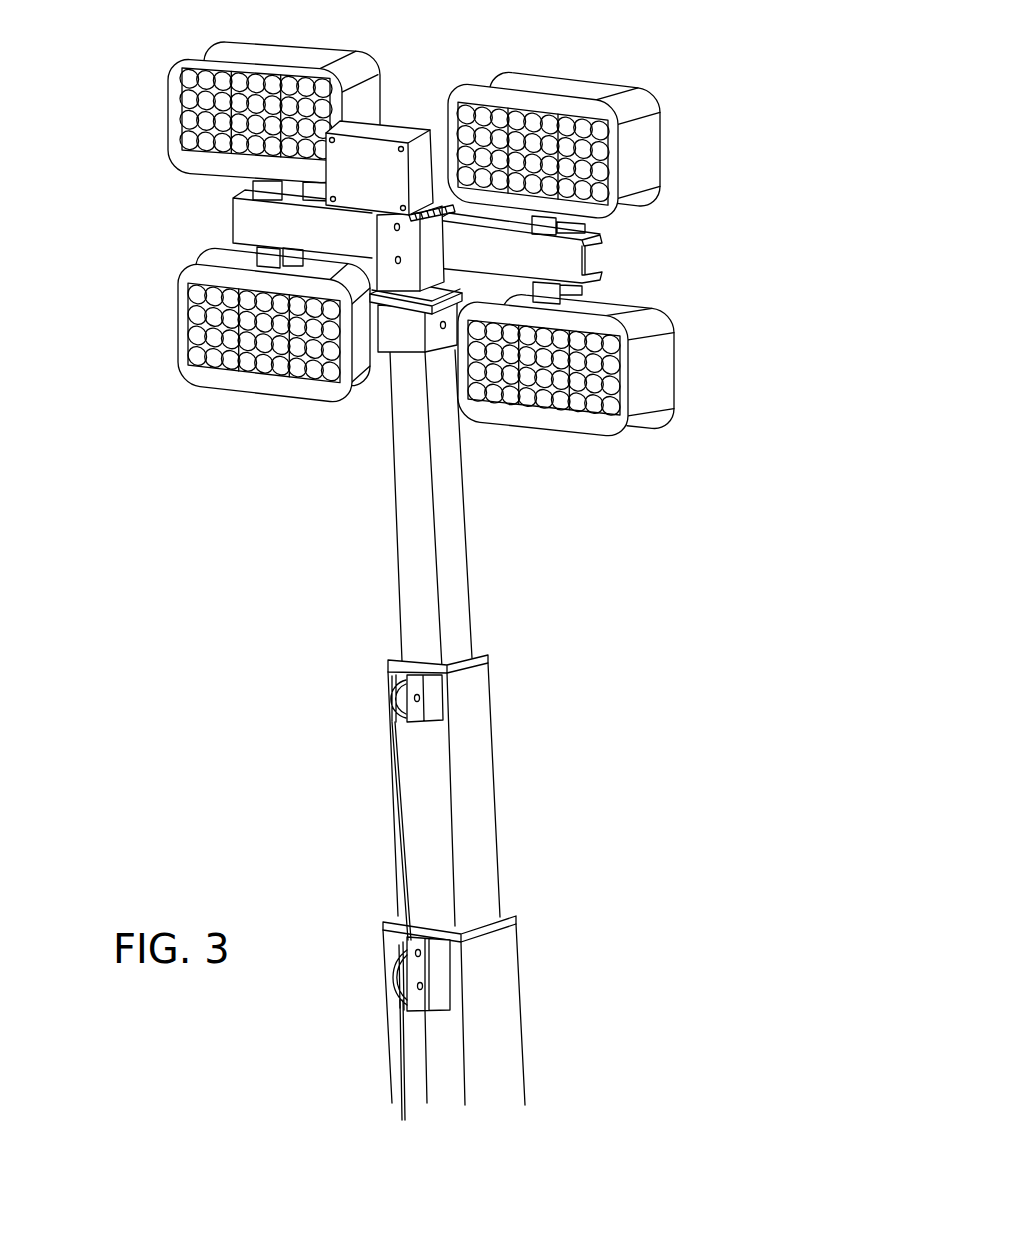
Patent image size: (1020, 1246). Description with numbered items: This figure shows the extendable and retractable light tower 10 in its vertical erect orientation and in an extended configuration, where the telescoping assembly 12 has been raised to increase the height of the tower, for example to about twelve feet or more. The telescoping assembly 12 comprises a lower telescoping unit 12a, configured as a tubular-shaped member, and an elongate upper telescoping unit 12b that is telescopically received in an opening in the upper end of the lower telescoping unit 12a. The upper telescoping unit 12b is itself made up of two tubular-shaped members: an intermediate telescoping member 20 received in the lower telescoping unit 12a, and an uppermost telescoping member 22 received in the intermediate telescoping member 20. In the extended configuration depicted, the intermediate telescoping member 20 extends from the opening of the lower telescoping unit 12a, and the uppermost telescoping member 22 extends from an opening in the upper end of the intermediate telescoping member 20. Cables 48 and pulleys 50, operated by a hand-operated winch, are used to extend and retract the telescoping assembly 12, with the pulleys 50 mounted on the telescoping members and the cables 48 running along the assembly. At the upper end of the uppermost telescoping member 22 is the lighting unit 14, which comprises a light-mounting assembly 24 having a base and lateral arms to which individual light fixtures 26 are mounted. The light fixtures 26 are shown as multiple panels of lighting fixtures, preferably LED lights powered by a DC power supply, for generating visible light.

The light tower 10 is at (826, 177).
The telescoping assembly 12 is at (226, 677).
The lower telescoping unit 12a is at (517, 982).
The upper telescoping unit 12b is at (468, 607).
The lighting unit 14 is at (104, 180).
The intermediate telescoping member 20 is at (495, 836).
The uppermost telescoping member 22 is at (457, 512).
The light-mounting assembly 24 is at (620, 258).
The light fixtures 26 is at (363, 68).
The cables 48 is at (403, 841).
The pulleys 50 is at (401, 708).